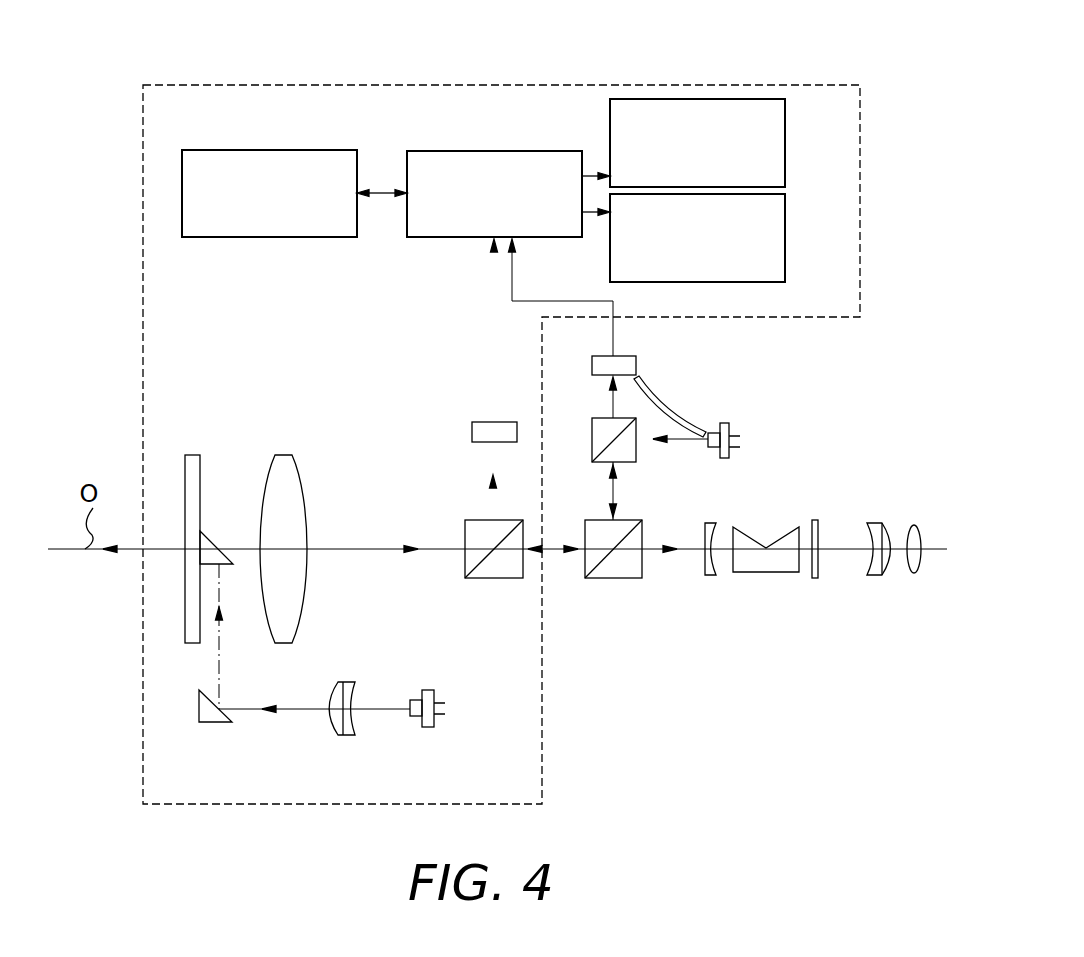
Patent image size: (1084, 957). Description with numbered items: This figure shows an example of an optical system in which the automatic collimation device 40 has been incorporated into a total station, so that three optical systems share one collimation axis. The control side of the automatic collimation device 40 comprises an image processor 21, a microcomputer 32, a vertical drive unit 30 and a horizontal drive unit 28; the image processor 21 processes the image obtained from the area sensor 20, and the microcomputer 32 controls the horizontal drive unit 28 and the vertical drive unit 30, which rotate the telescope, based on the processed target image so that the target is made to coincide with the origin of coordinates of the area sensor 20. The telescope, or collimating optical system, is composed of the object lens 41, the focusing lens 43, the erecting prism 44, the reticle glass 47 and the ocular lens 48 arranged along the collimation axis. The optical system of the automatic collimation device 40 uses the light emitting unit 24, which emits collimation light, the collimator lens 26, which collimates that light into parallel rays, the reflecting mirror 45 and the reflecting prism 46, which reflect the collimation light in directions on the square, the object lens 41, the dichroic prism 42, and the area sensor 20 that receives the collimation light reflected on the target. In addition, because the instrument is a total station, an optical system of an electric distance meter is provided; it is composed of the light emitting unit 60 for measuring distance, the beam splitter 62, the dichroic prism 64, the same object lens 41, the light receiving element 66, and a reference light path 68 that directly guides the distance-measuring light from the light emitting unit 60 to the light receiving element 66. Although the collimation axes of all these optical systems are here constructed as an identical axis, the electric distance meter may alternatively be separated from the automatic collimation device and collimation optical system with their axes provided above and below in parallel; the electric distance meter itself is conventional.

The automatic collimation device 40 is at (503, 85).
The image processor 21 is at (250, 237).
The microcomputer 32 is at (425, 237).
The vertical drive unit 30 is at (785, 165).
The horizontal drive unit 28 is at (785, 253).
The light receiving element 66 is at (636, 365).
The beam splitter 62 is at (592, 418).
The reference light path 68 is at (671, 418).
The light emitting unit for measuring distance 60 is at (720, 423).
The area sensor 20 is at (472, 430).
The object lens 41 is at (298, 478).
The reflecting prism 46 is at (208, 540).
The reflecting mirror 45 is at (213, 722).
The collimator lens 26 is at (345, 735).
The light emitting unit 24 is at (428, 727).
The dichroic prism 42 is at (490, 578).
The dichroic prism 64 is at (613, 578).
The focusing lens 43 is at (707, 523).
The erecting prism 44 is at (770, 542).
The reticle glass 47 is at (818, 535).
The ocular lens 48 is at (898, 535).